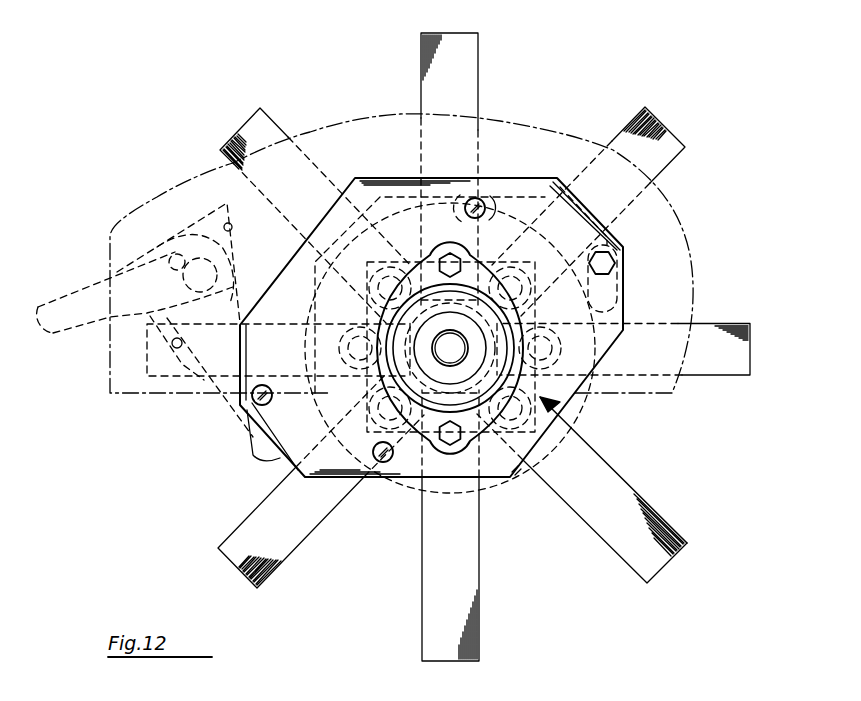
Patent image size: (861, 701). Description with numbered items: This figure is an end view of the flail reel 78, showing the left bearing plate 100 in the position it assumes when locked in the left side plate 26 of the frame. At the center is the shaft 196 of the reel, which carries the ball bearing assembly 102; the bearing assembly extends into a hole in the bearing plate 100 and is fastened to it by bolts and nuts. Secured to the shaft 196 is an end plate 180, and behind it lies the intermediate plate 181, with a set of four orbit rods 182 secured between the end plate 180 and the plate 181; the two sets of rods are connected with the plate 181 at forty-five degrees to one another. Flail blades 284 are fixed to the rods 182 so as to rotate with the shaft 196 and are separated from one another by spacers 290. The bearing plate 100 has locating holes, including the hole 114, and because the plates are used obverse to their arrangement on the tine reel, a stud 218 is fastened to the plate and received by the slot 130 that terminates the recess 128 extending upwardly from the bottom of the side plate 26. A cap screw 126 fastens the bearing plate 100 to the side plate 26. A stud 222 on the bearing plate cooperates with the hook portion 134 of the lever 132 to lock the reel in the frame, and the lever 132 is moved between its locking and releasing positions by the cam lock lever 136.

The left side plate 26 is at (122, 397).
The flail reel 78 is at (572, 404).
The bearing plate 100 is at (498, 492).
The ball bearing assembly 102 is at (433, 445).
The locating hole 114 is at (383, 462).
The cap screw 126 is at (607, 262).
The recess 128 is at (577, 396).
The slot 130 is at (464, 208).
The lever 132 is at (207, 385).
The hook portion 134 is at (250, 457).
The cam lock lever 136 is at (78, 295).
The end plate 180 is at (510, 478).
The intermediate plate 181 is at (540, 397).
The orbit rod 182 is at (533, 260).
The shaft 196 is at (450, 348).
The stud 218 is at (487, 203).
The stud 222 is at (250, 412).
The flail blade 284 is at (478, 62).
The spacer 290 is at (630, 305).